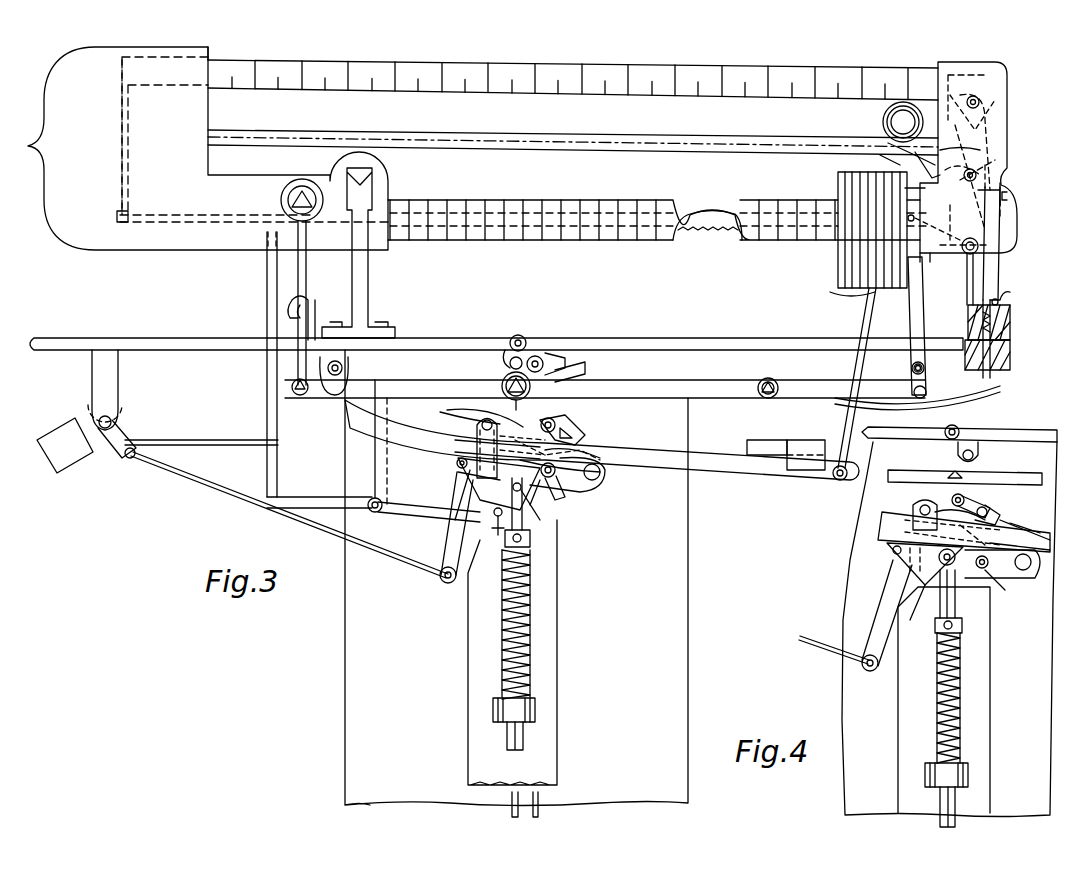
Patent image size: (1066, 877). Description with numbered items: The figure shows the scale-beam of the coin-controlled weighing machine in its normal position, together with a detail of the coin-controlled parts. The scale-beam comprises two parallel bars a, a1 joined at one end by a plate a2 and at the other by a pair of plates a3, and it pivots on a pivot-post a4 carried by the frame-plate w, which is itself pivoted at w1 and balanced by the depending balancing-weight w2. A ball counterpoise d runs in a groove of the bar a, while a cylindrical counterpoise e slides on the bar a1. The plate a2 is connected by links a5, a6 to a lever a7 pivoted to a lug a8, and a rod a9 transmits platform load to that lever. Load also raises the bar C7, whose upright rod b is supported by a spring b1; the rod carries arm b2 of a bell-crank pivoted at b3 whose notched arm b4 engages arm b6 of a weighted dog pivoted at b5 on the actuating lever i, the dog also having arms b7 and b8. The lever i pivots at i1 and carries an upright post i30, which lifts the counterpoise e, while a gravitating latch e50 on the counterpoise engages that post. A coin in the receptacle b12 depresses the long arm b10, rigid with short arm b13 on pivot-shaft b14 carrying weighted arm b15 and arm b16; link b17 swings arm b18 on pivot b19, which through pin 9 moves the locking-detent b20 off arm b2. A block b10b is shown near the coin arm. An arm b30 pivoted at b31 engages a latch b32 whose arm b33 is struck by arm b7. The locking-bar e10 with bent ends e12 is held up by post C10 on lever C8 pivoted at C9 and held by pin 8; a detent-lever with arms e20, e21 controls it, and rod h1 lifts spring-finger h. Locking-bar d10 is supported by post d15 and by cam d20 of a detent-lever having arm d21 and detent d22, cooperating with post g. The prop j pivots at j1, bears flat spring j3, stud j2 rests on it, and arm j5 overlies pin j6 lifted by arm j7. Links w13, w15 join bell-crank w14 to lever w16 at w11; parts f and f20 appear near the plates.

In FIG. 3, the scale-beam bar a is at (721, 142).
In FIG. 3, the scale-beam bar a1 is at (768, 204).
In FIG. 3, the connecting plate a2 is at (193, 116).
In FIG. 3, the end plates a3 is at (988, 130).
In FIG. 3, the pivot-post a4 is at (362, 296).
In FIG. 3, the link a5 is at (306, 268).
In FIG. 3, the link a6 is at (313, 322).
In FIG. 3, the lever a7 is at (432, 386).
In FIG. 3, the lug a8 is at (780, 371).
In FIG. 3, the rod a9 is at (520, 426).
In FIG. 4, the rod a9 is at (910, 475).
In FIG. 3, the upright rod b is at (524, 735).
In FIG. 4, the upright rod b is at (940, 802).
In FIG. 3, the spring b1 is at (530, 627).
In FIG. 4, the spring b1 is at (962, 656).
In FIG. 3, the bell-crank arm b2 is at (556, 480).
In FIG. 4, the bell-crank arm b2 is at (958, 612).
In FIG. 3, the bell-crank pivot b3 is at (562, 486).
In FIG. 4, the bell-crank pivot b3 is at (990, 576).
In FIG. 3, the notched arm b4 is at (484, 441).
In FIG. 4, the notched arm b4 is at (882, 527).
In FIG. 3, the dog pivot b5 is at (566, 428).
In FIG. 4, the dog pivot b5 is at (988, 510).
In FIG. 3, the dog arm b6 is at (586, 455).
In FIG. 4, the dog arm b6 is at (928, 510).
In FIG. 3, the dog arm b7 is at (541, 420).
In FIG. 4, the dog arm b7 is at (952, 500).
In FIG. 3, the weighted dog arm b8 is at (575, 432).
In FIG. 4, the weighted dog arm b8 is at (1033, 517).
In FIG. 3, the long arm b10 is at (201, 440).
In FIG. 3, the block b10b is at (767, 447).
In FIG. 3, the coin-receptacle b12 is at (810, 440).
In FIG. 3, the short arm b13 is at (124, 440).
In FIG. 3, the pivot-shaft b14 is at (100, 418).
In FIG. 3, the weighted arm b15 is at (58, 428).
In FIG. 3, the arm b16 is at (118, 455).
In FIG. 3, the link b17 is at (196, 484).
In FIG. 4, the link b17 is at (800, 638).
In FIG. 3, the arm b18 is at (452, 540).
In FIG. 4, the arm b18 is at (882, 615).
In FIG. 3, the pivot pin b19 is at (478, 428).
In FIG. 4, the pivot pin b19 is at (913, 510).
In FIG. 3, the locking-detent b20 is at (456, 463).
In FIG. 4, the locking-detent b20 is at (897, 553).
In FIG. 3, the locking arm b30 is at (540, 525).
In FIG. 4, the locking arm b30 is at (1015, 562).
In FIG. 3, the arm pivot b31 is at (602, 474).
In FIG. 4, the arm pivot b31 is at (1025, 572).
In FIG. 3, the latch b32 is at (457, 476).
In FIG. 4, the latch b32 is at (897, 580).
In FIG. 3, the latch arm b33 is at (468, 420).
In FIG. 4, the latch arm b33 is at (1020, 539).
In FIG. 3, the bar C7 is at (467, 732).
In FIG. 4, the bar C7 is at (990, 712).
In FIG. 3, the lever C8 is at (308, 497).
In FIG. 3, the lever pivot C9 is at (376, 512).
In FIG. 3, the upright post C10 is at (266, 305).
In FIG. 3, the ball counterpoise d is at (882, 120).
In FIG. 3, the locking-bar d10 is at (473, 88).
In FIG. 3, the post d15 is at (132, 175).
In FIG. 3, the cam d20 is at (978, 102).
In FIG. 3, the detent-lever arm d21 is at (963, 103).
In FIG. 3, the detent d22 is at (956, 170).
In FIG. 3, the cylindrical counterpoise e is at (838, 182).
In FIG. 3, the locking-bar e10 is at (722, 236).
In FIG. 3, the bent ends e12 is at (117, 216).
In FIG. 3, the detent-lever arm e20 is at (945, 256).
In FIG. 3, the detent-lever arm e21 is at (993, 225).
In FIG. 3, the gravitating latch e50 is at (830, 292).
In FIG. 3, the plate f is at (987, 140).
In FIG. 3, the plate f20 is at (917, 190).
In FIG. 3, the upright post g is at (1012, 282).
In FIG. 3, the spring-finger h is at (903, 147).
In FIG. 3, the rod h1 is at (920, 162).
In FIG. 3, the actuating lever i is at (663, 463).
In FIG. 4, the actuating lever i is at (1032, 523).
In FIG. 3, the actuating lever pivot i1 is at (330, 385).
In FIG. 3, the upright post i30 is at (862, 310).
In FIG. 3, the prop j is at (996, 290).
In FIG. 3, the prop pivot j1 is at (999, 304).
In FIG. 3, the stud j2 is at (1001, 197).
In FIG. 3, the flat spring j3 is at (988, 176).
In FIG. 3, the short arm j5 is at (968, 292).
In FIG. 3, the spring-pressed pin j6 is at (1012, 360).
In FIG. 3, the arm j7 is at (1000, 392).
In FIG. 3, the frame-plate w is at (433, 336).
In FIG. 4, the frame-plate w is at (1017, 428).
In FIG. 3, the frame-plate pivot w1 is at (527, 340).
In FIG. 4, the frame-plate pivot w1 is at (959, 428).
In FIG. 3, the balancing-weight w2 is at (689, 655).
In FIG. 4, the balancing-weight w2 is at (949, 629).
In FIG. 3, the pivot w11 is at (926, 368).
In FIG. 3, the link w13 is at (503, 380).
In FIG. 3, the bell-crank lever w14 is at (510, 352).
In FIG. 3, the link w15 is at (648, 384).
In FIG. 3, the lever w16 is at (925, 305).
In FIG. 3, the pin 8 is at (500, 520).
In FIG. 3, the pin 9 is at (460, 465).